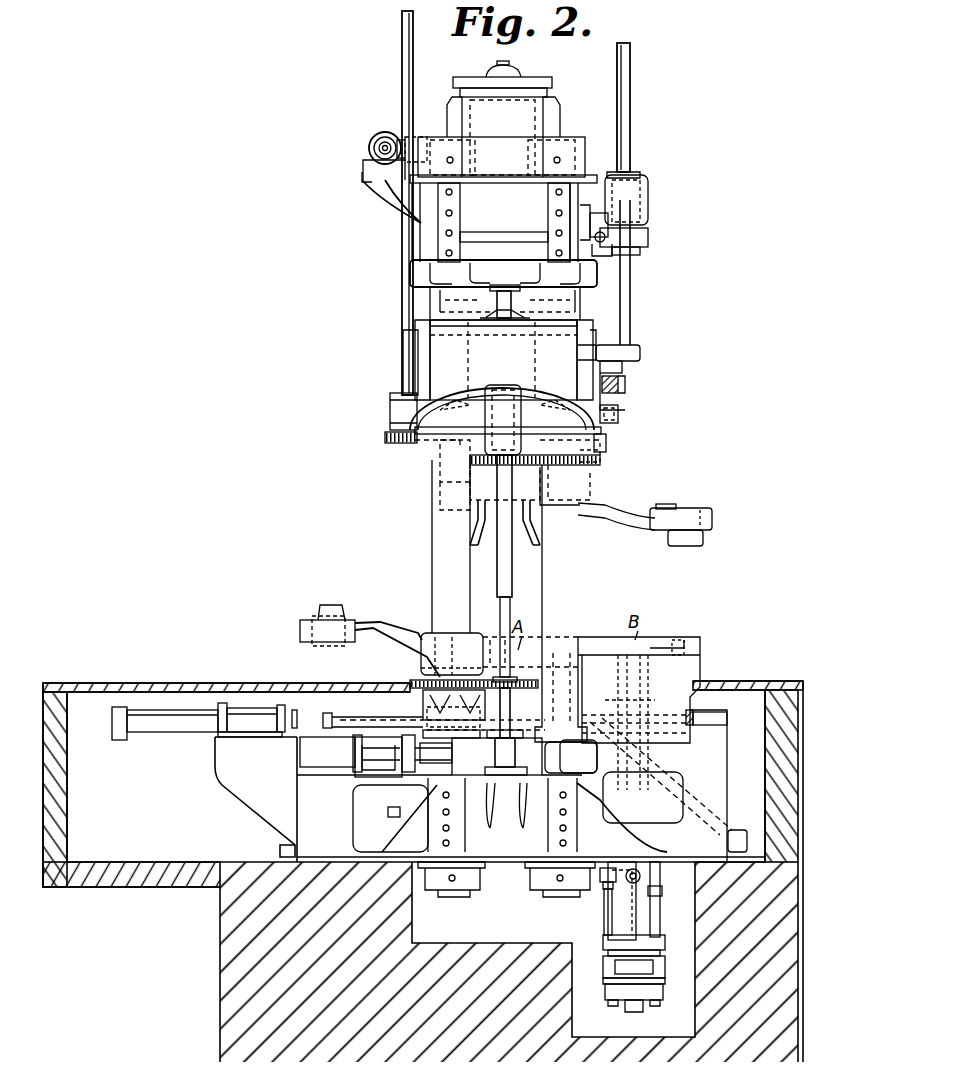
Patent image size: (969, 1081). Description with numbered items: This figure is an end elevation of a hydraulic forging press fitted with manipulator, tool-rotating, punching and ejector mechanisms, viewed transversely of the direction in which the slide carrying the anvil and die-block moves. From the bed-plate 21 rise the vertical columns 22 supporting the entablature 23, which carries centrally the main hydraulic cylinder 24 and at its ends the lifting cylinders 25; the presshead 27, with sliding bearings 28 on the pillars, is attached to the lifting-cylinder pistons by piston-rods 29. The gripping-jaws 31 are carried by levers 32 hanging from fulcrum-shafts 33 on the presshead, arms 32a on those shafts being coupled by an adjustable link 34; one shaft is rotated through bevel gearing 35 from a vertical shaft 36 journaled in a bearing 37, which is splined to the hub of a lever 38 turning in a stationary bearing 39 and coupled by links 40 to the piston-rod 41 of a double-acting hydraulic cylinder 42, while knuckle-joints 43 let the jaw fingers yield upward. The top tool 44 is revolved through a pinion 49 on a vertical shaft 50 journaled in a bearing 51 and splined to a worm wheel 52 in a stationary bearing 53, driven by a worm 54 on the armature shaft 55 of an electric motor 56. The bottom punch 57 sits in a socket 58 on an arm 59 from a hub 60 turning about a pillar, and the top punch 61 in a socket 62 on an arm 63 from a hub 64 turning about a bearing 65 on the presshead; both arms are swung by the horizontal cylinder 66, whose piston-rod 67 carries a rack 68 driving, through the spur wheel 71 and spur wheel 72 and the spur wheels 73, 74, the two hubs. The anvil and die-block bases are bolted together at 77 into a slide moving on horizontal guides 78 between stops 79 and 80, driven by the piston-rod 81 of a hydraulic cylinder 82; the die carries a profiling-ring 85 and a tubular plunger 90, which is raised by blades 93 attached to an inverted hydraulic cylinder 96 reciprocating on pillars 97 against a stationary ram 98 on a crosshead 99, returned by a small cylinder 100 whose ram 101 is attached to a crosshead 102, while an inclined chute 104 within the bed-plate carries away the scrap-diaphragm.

The bed-plate 21 is at (272, 806).
The vertical columns 22 is at (432, 569).
The entablature 23 is at (430, 237).
The main hydraulic cylinder 24 is at (560, 118).
The lifting cylinders 25 is at (533, 76).
The presshead 27 is at (503, 360).
The sliding bearings 28 is at (418, 355).
The piston-rods 29 is at (511, 298).
The gripping-jaws 31 is at (505, 549).
The levers 32 is at (497, 492).
The arms 32a is at (621, 418).
The fulcrum-shafts 33 is at (545, 398).
The adjustable link 34 is at (601, 432).
The bevel gearing 35 is at (627, 386).
The vertical shaft 36 is at (631, 84).
The bearing 37 is at (640, 353).
The lever 38 is at (649, 237).
The stationary bearing 39 is at (649, 190).
The links 40 is at (610, 256).
The piston-rod 41 is at (634, 250).
The double-acting hydraulic cylinder 42 is at (609, 222).
The knuckle-joints 43 is at (478, 505).
The top tool 44 is at (440, 500).
The pinion 49 is at (400, 444).
The vertical shaft 50 is at (402, 58).
The bearing 51 is at (390, 412).
The worm wheel 52 is at (418, 140).
The stationary bearing 53 is at (375, 196).
The worm 54 is at (380, 150).
The armature shaft 55 is at (372, 140).
The electric motor 56 is at (383, 131).
The bottom punch 57 is at (331, 604).
The socket 58 is at (300, 630).
The arm 59 is at (385, 625).
The hub 60 is at (421, 670).
The top punch 61 is at (700, 546).
The socket 62 is at (712, 519).
The arm 63 is at (630, 522).
The hub 64 is at (575, 478).
The bearing 65 is at (606, 444).
The horizontal cylinder 66 is at (326, 756).
The hydraulic piston-rod 67 is at (412, 745).
The rack 68 is at (455, 752).
The spur wheel 71 is at (515, 700).
The spur wheel 72 is at (410, 690).
The spur wheel 73 is at (470, 458).
The spur wheel 74 is at (601, 462).
The bolting 77 is at (572, 705).
The horizontal guides 78 is at (347, 727).
The stop 79 is at (328, 713).
The stop 80 is at (700, 712).
The piston-rod 81 is at (374, 717).
The double-acting hydraulic cylinder 82 is at (159, 737).
The profiling-ring 85 is at (676, 641).
The tubular plunger 90 is at (615, 676).
The blades 93 is at (640, 810).
The inverted hydraulic cylinder 96 is at (626, 901).
The pillars 97 is at (661, 903).
The hydraulic ram 98 is at (650, 969).
The crosshead 99 is at (610, 992).
The small stationary hydraulic cylinder 100 is at (603, 889).
The ram 101 is at (605, 920).
The crosshead 102 is at (610, 948).
The inclined chute 104 is at (690, 800).